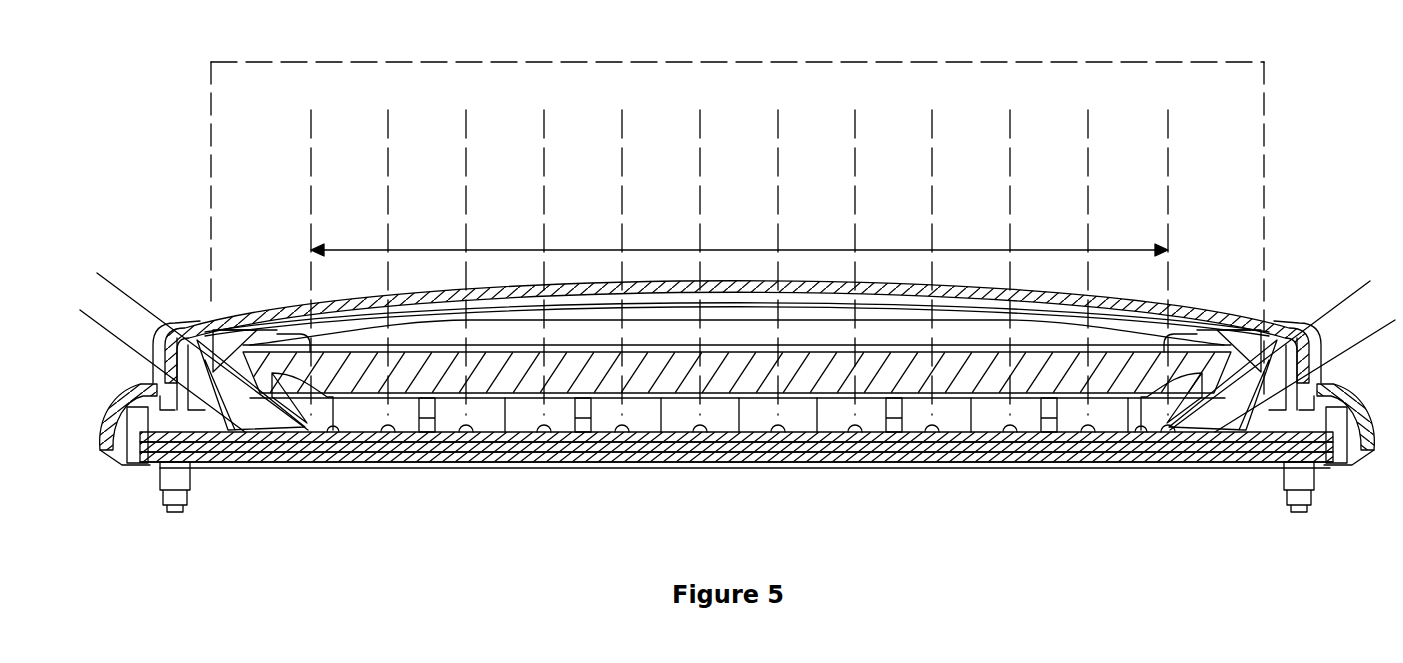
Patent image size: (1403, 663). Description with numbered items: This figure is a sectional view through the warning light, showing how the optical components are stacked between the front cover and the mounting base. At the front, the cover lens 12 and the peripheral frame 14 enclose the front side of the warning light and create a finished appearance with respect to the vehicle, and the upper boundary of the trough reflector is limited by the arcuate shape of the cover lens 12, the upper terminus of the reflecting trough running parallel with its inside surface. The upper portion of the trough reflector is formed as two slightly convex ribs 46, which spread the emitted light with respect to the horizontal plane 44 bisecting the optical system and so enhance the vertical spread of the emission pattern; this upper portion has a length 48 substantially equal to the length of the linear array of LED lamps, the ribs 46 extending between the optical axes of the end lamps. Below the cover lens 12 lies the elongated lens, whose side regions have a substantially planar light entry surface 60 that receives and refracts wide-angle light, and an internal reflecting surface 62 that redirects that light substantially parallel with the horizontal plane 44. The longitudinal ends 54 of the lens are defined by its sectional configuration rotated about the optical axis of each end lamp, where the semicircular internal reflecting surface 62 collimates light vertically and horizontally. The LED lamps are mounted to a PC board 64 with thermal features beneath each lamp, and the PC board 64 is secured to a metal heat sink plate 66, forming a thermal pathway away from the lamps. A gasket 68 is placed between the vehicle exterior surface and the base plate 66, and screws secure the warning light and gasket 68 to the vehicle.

The cover lens 12 is at (198, 325).
The peripheral frame 14 is at (100, 443).
The horizontal plane 44 is at (1228, 120).
The convex ribs 46 is at (656, 335).
The length 48 is at (737, 250).
The longitudinal ends 54 is at (280, 343).
The light entry surface 60 is at (337, 437).
The internal reflecting surface 62 is at (277, 350).
The PC board 64 is at (277, 440).
The metal heat sink plate 66 is at (893, 457).
The gasket 68 is at (1077, 460).